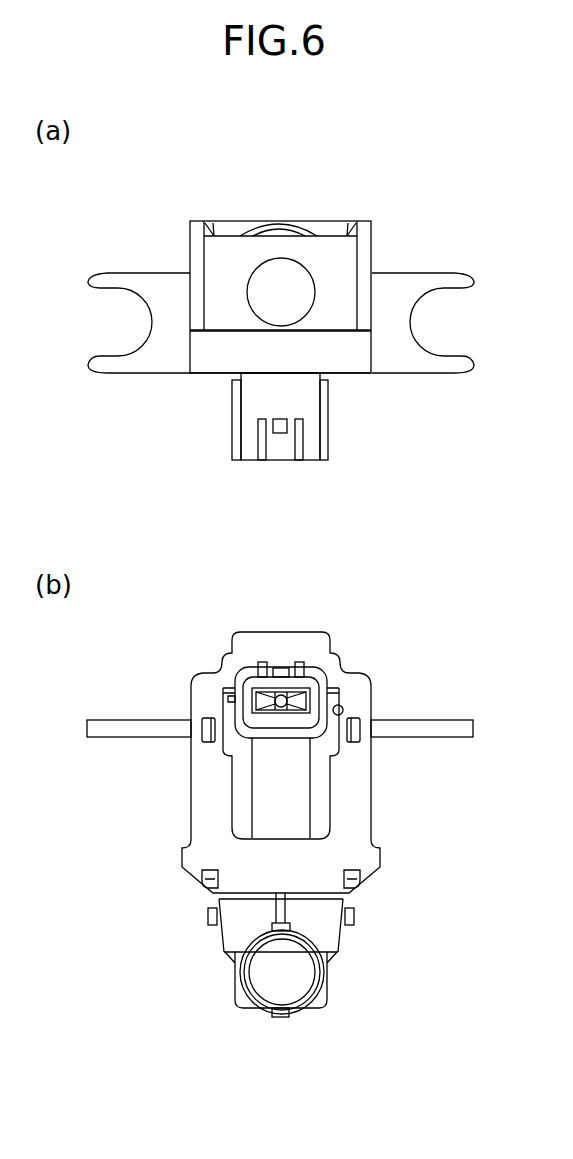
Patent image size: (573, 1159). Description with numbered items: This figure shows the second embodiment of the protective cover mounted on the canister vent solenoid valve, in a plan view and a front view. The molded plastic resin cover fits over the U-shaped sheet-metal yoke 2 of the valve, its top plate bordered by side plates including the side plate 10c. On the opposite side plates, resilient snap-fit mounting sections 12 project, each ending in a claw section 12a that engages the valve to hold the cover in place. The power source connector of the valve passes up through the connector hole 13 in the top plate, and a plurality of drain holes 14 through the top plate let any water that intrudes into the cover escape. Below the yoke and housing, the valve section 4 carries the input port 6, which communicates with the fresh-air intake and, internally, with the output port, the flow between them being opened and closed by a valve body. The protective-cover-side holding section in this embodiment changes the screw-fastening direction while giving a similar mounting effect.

The yoke 2 is at (239, 263).
The valve section 4 is at (320, 923).
The input port 6 is at (308, 990).
The side plate 10c is at (352, 352).
The mounting section 12 is at (189, 242).
The claw section 12a is at (211, 233).
The connector hole 13 is at (343, 715).
The drain holes 14 is at (210, 887).